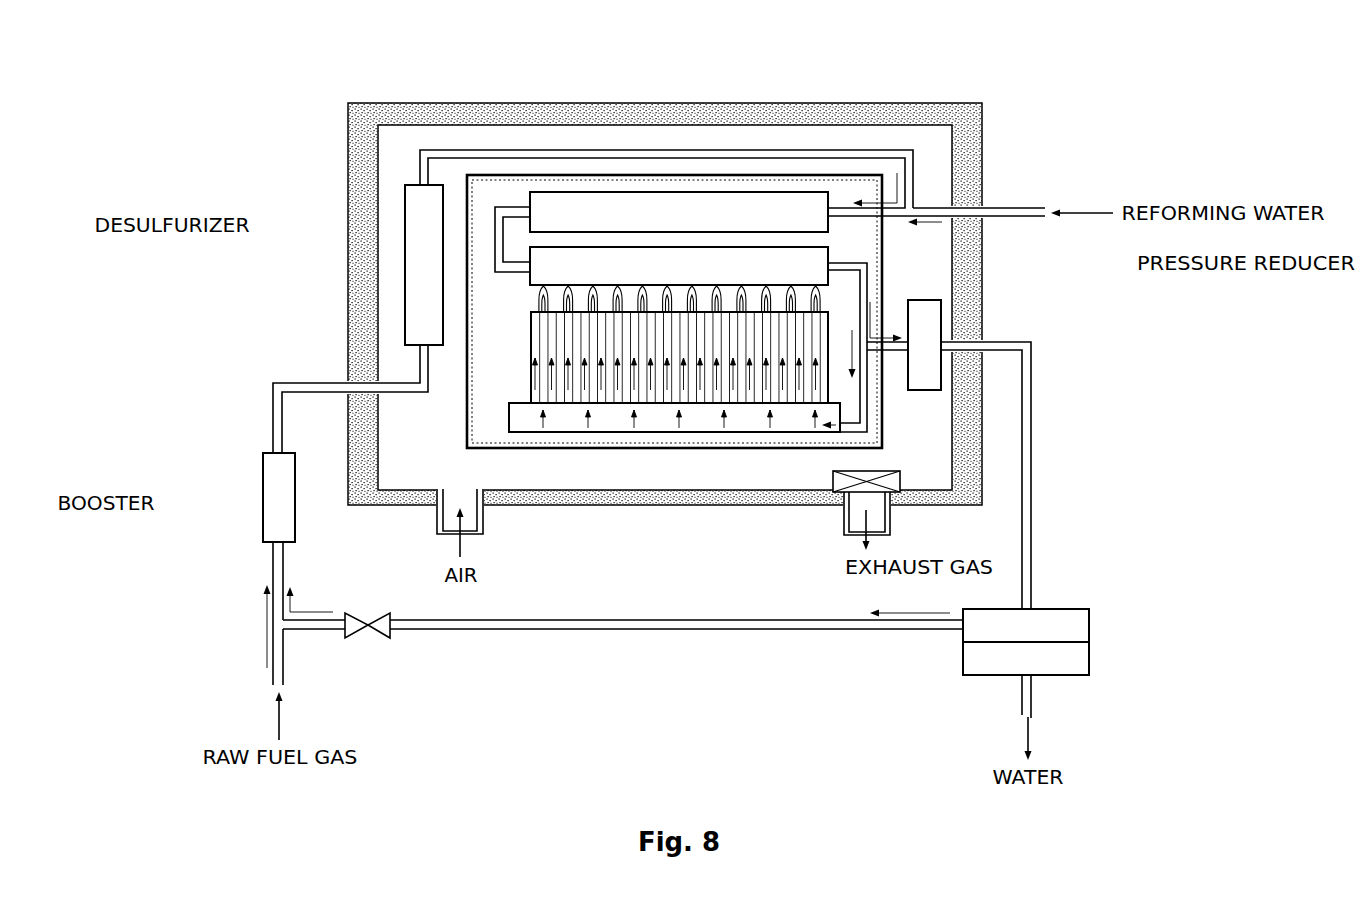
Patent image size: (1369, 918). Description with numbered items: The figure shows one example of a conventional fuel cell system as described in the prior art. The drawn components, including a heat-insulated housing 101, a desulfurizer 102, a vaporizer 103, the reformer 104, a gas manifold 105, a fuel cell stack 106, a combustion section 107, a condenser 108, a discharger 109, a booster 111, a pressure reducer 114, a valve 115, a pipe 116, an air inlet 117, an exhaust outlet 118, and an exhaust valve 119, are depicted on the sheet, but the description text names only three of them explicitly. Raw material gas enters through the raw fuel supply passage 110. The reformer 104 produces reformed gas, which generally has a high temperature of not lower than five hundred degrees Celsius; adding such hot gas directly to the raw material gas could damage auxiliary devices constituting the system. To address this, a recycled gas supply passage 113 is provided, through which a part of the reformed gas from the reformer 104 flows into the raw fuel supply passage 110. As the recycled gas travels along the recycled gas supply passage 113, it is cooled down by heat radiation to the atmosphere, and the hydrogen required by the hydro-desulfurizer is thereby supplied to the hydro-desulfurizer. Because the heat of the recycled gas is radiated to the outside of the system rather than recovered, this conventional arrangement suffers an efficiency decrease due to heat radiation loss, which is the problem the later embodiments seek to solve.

The housing (heat insulating casing) 101 is at (348, 135).
The desulfurizer 102 is at (405, 247).
The vaporizer 103 is at (565, 192).
The reformer 104 is at (740, 247).
The gas distribution chamber (manifold) 105 is at (588, 420).
The fuel cell stack 106 is at (525, 383).
The combustion section (burner flames) 107 is at (537, 298).
The condenser 108 is at (1089, 623).
The discharger 109 is at (1089, 662).
The raw fuel supply passage 110 is at (273, 418).
The booster 111 is at (263, 487).
The recycled gas supply passage 113 is at (1031, 387).
The pressure reducer 114 is at (927, 300).
The valve 115 is at (383, 638).
The fuel gas pipe from desulfurizer to vaporizer 116 is at (837, 157).
The air inlet 117 is at (483, 520).
The exhaust gas outlet 118 is at (844, 525).
The exhaust valve 119 is at (900, 472).